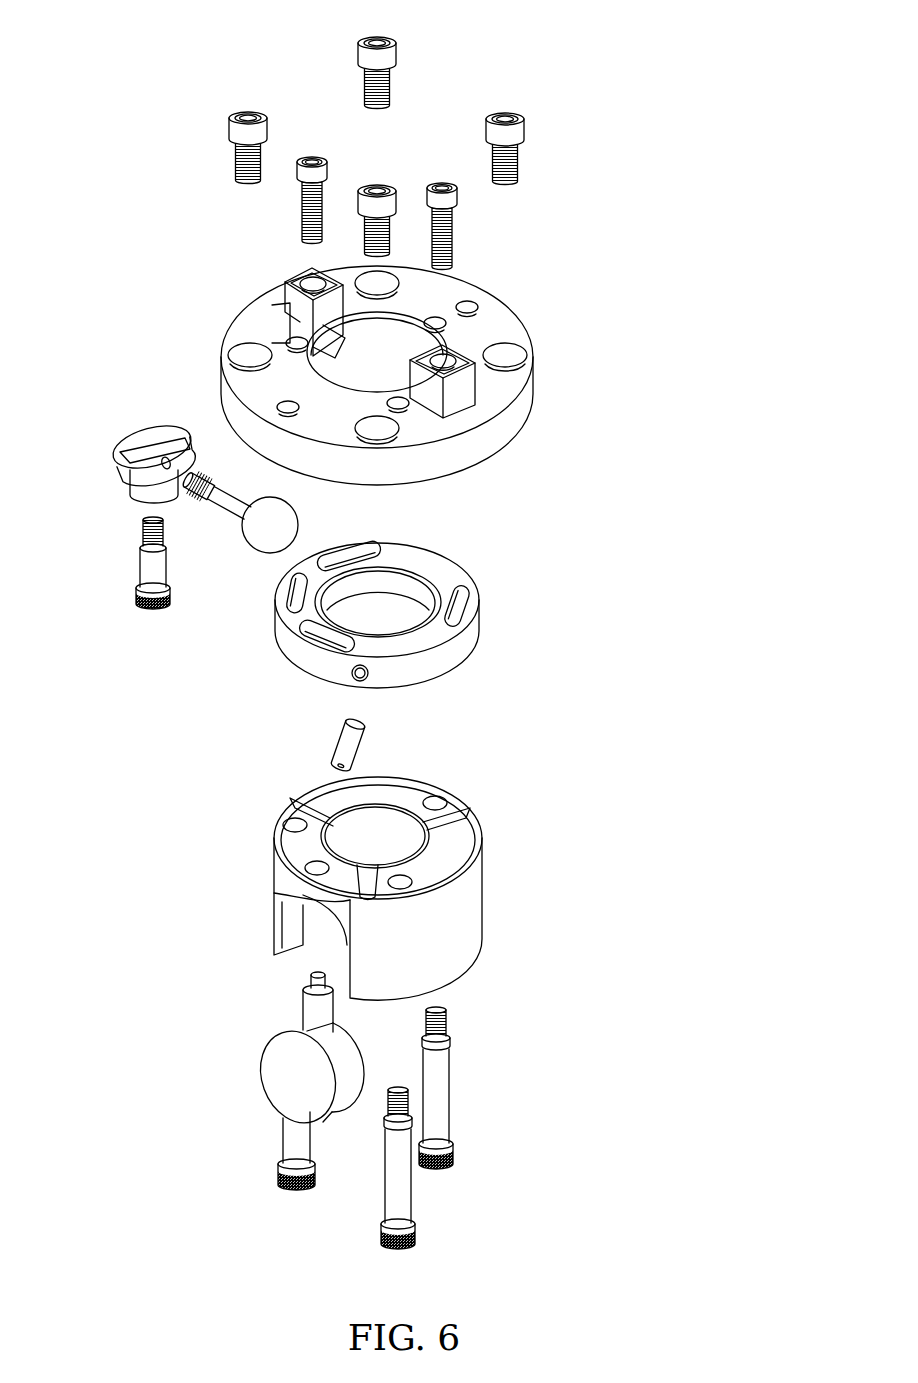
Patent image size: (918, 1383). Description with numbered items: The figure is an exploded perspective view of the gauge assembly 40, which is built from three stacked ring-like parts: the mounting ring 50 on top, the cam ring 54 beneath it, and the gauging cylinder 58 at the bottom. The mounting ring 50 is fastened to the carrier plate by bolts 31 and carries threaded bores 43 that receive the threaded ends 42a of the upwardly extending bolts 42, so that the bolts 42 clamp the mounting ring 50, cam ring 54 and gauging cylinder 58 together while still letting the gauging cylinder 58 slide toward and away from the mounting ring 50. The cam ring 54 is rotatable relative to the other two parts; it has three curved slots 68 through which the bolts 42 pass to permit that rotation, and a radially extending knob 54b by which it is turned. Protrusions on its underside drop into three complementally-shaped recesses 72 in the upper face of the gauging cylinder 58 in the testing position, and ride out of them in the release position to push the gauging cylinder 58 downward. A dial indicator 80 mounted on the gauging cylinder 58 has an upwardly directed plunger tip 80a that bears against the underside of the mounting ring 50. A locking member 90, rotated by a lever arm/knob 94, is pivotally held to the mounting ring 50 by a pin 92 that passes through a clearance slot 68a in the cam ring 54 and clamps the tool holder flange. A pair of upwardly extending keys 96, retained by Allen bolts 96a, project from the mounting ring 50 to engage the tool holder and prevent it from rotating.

The bolts 31 is at (393, 38).
The Allen bolts 96a is at (322, 158).
The keys 96 is at (293, 290).
The threaded bores 43 is at (292, 340).
The mounting ring 50 is at (407, 382).
The locking member 90 is at (130, 436).
The pin 92 is at (150, 568).
The lever arm/knob 94 is at (252, 548).
The gauge assembly 40 is at (435, 626).
The cam ring 54 is at (379, 626).
The curved slots 68 is at (350, 556).
The clearance slot 68a is at (283, 598).
The radially extending knob 54b is at (360, 745).
The gauging cylinder 58 is at (418, 883).
The recesses 72 is at (298, 805).
The dial indicator 80 is at (287, 1045).
The plunger tip 80a is at (308, 982).
The bolts 42 is at (374, 1128).
The threaded ends 42a is at (396, 1087).